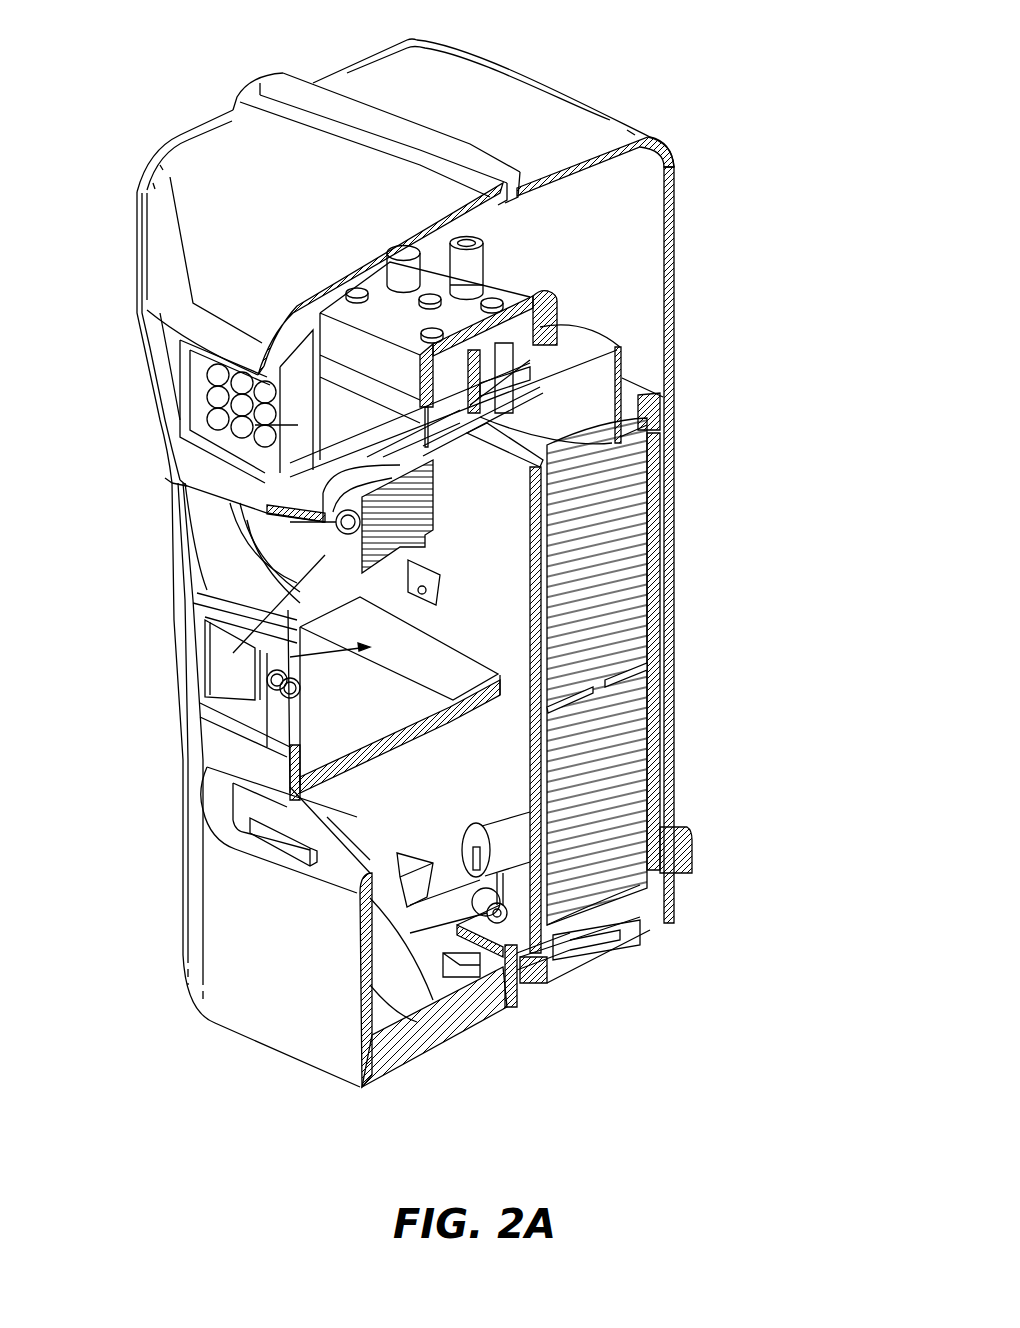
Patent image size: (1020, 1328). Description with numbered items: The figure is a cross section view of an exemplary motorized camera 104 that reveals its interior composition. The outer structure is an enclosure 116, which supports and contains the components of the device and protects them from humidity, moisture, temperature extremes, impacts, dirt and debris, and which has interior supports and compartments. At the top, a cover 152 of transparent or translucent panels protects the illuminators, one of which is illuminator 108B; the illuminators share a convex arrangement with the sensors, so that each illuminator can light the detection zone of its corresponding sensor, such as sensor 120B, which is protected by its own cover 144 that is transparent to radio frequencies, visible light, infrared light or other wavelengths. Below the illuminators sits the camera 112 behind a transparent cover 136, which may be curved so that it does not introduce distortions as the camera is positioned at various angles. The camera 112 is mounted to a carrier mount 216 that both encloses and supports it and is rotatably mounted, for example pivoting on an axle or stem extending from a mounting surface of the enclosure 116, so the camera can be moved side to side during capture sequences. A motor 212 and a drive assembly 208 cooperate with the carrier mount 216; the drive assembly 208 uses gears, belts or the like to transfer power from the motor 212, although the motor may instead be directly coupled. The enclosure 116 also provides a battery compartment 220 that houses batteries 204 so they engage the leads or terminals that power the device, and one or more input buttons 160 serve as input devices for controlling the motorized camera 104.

The motorized camera 104 is at (728, 132).
The cover 152 is at (140, 188).
The motor 212 is at (495, 250).
The drive assembly 208 is at (543, 291).
The enclosure 116 is at (675, 307).
The carrier mount 216 is at (622, 363).
The battery compartment 220 is at (653, 438).
The batteries 204 is at (632, 710).
The illuminator 108B is at (172, 483).
The cover 136 is at (255, 547).
The camera 112 is at (297, 597).
The cover 144 is at (200, 697).
The sensor 120B is at (300, 715).
The input buttons 160 is at (357, 897).